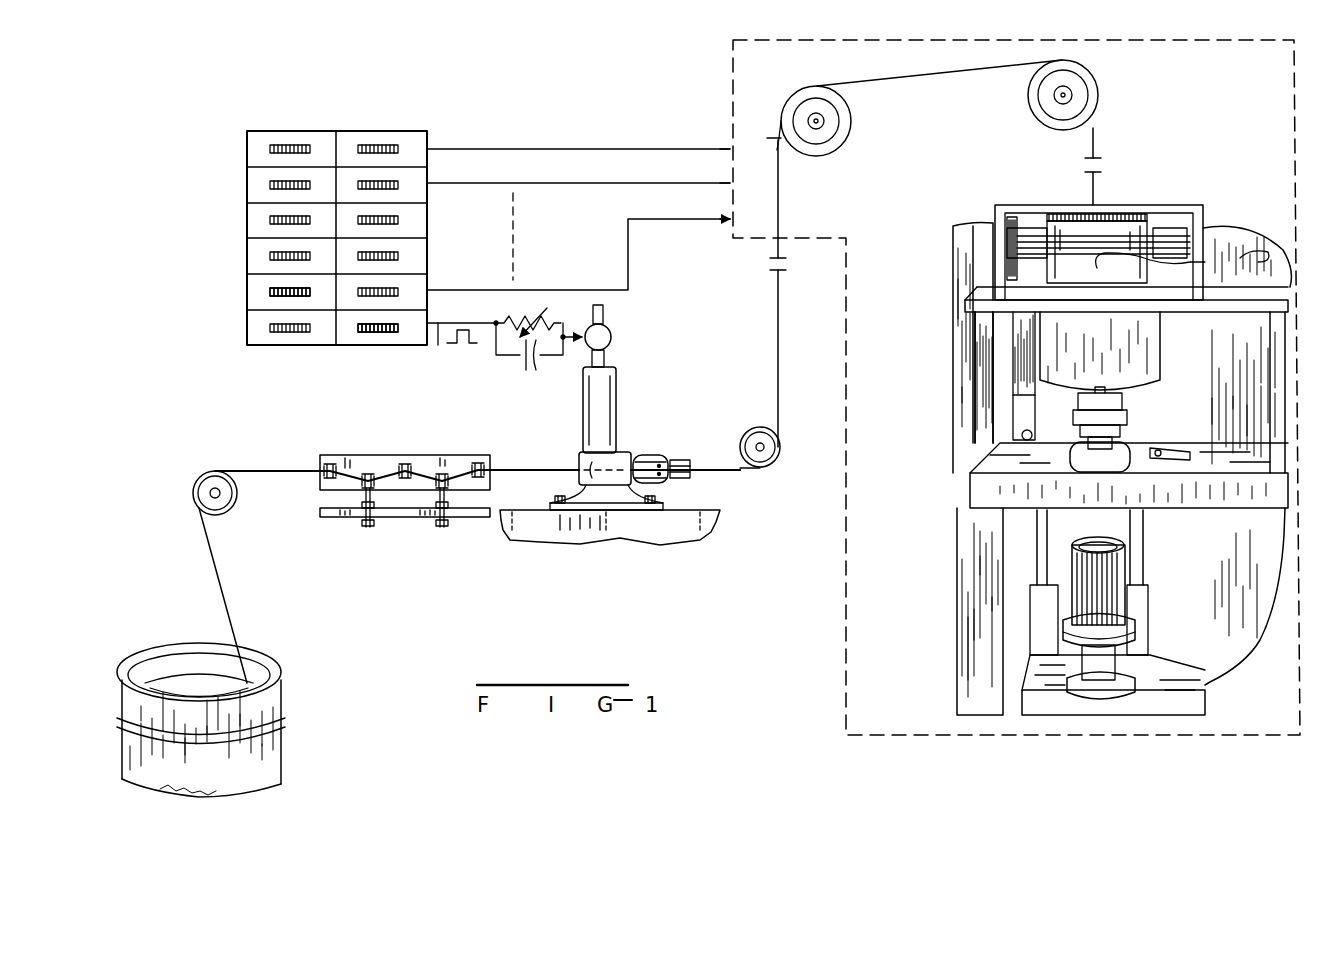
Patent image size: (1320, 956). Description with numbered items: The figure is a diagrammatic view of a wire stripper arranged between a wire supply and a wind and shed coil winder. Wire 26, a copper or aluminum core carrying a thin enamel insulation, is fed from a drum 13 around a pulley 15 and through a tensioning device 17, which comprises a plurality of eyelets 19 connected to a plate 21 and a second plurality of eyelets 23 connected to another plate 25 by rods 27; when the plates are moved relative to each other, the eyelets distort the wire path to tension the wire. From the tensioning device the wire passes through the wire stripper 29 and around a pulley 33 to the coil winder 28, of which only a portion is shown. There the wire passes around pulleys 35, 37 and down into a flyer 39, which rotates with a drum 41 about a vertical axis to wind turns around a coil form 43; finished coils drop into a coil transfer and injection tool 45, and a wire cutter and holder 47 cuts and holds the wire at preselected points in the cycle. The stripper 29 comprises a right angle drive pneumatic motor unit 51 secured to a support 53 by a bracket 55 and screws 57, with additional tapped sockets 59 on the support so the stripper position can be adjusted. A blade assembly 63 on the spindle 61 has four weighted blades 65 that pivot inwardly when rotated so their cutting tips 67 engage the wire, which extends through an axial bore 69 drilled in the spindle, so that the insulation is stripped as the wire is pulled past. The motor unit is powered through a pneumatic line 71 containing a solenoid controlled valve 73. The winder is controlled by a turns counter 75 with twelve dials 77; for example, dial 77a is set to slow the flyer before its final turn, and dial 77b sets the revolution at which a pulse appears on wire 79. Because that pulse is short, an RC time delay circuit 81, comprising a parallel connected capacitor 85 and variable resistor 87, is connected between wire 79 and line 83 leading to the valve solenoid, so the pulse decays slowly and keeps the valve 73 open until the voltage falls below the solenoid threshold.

The drum 13 is at (283, 697).
The pulley 15 is at (192, 494).
The tensioning device 17 is at (359, 440).
The eyelets 19 is at (333, 464).
The plate 21 is at (320, 458).
The eyelets 23 is at (370, 472).
The plate 25 is at (468, 518).
The wire 26 is at (270, 471).
The rods 27 is at (363, 498).
The coil winder 28 is at (730, 80).
The wire stripper 29 is at (660, 418).
The pulley 33 is at (782, 452).
The pulley 35 is at (812, 90).
The pulley 37 is at (1078, 70).
The flyer 39 is at (1020, 404).
The drum 41 is at (1060, 352).
The coil form 43 is at (1088, 460).
The coil transfer and injection tool 45 is at (1070, 618).
The wire cutter and holder 47 is at (1163, 462).
The pneumatic motor unit 51 is at (616, 412).
The support 53 is at (524, 540).
The bracket 55 is at (620, 492).
The screws 57 is at (556, 497).
The tapped sockets 59 is at (705, 517).
The spindle 61 is at (632, 462).
The blade assembly 63 is at (670, 452).
The blades 65 is at (690, 478).
The cutting tips 67 is at (691, 463).
The axial bore 69 is at (566, 470).
The line 71 is at (604, 312).
The solenoid controlled valve 73 is at (611, 330).
The turns counter 75 is at (243, 230).
The dials 77 is at (283, 145).
The dial 77a is at (285, 288).
The dial 77b is at (396, 326).
The wire 79 is at (442, 342).
The RC time delay circuit 81 is at (548, 304).
The line 83 is at (576, 332).
The capacitor 85 is at (520, 366).
The variable resistor 87 is at (513, 322).